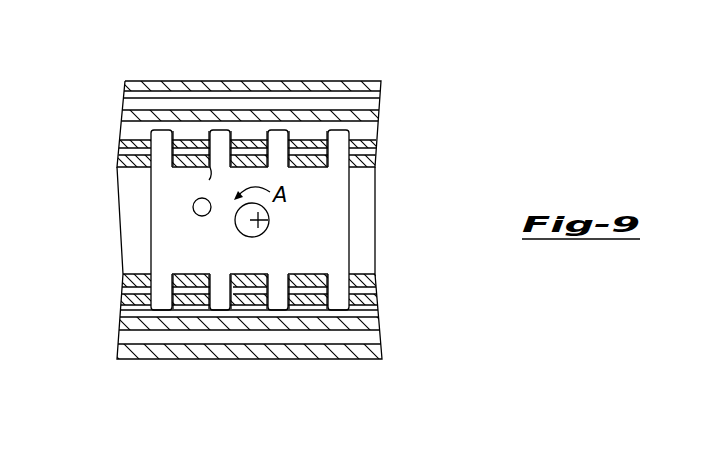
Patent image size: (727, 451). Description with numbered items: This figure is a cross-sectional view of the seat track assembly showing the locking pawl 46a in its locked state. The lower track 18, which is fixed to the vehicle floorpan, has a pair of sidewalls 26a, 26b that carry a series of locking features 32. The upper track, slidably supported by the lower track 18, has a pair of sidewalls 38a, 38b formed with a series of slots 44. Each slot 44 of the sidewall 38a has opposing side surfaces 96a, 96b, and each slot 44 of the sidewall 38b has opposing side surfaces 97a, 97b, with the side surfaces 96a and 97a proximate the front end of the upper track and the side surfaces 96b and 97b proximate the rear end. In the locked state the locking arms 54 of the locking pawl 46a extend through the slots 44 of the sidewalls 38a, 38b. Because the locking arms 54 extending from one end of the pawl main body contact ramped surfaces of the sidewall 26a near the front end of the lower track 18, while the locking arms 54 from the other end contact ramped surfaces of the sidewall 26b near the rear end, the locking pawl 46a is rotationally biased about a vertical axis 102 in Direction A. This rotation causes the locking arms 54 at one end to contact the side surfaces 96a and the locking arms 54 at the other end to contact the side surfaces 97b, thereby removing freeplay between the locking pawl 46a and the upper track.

The lower track 18 is at (127, 127).
The sidewall 26a is at (372, 301).
The sidewall 26b is at (360, 143).
The locking features 32 is at (217, 138).
The sidewall 38a is at (370, 292).
The sidewall 38b is at (360, 161).
The slots 44 is at (273, 167).
The locking pawl 46a is at (146, 318).
The locking arms 54 is at (225, 140).
The side surface 96a is at (247, 300).
The side surface 96b is at (218, 274).
The side surface 97a is at (193, 207).
The side surface 97b is at (209, 180).
The vertical axis 102 is at (268, 220).